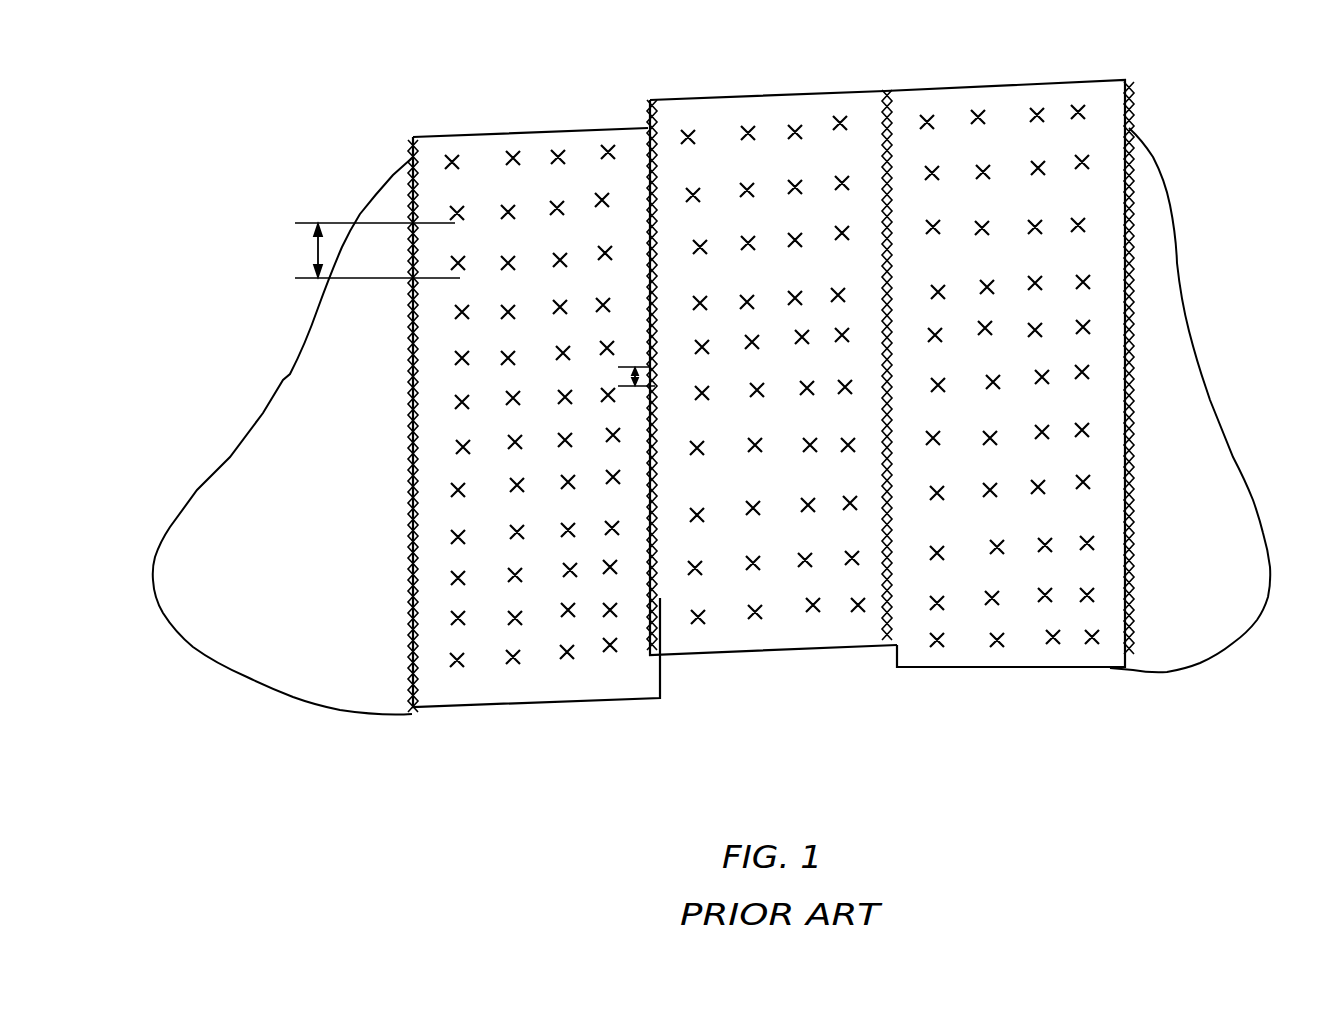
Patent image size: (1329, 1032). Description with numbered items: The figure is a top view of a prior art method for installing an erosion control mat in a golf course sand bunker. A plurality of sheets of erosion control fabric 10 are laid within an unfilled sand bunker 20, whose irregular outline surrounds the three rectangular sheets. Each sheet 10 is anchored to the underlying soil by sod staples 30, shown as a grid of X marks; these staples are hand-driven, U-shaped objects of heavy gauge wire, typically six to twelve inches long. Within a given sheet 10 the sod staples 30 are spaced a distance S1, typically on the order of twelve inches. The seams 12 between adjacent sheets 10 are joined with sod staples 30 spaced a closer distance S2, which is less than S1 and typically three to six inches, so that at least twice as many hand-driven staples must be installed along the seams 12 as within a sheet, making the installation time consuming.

The sheet of erosion control fabric 10 is at (537, 150).
The seam 12 is at (893, 572).
The unfilled sand bunker 20 is at (1157, 275).
The sod staple 30 is at (460, 538).
The sod staple spacing within a sheet S1 is at (316, 250).
The sod staple spacing along a seam S2 is at (630, 381).